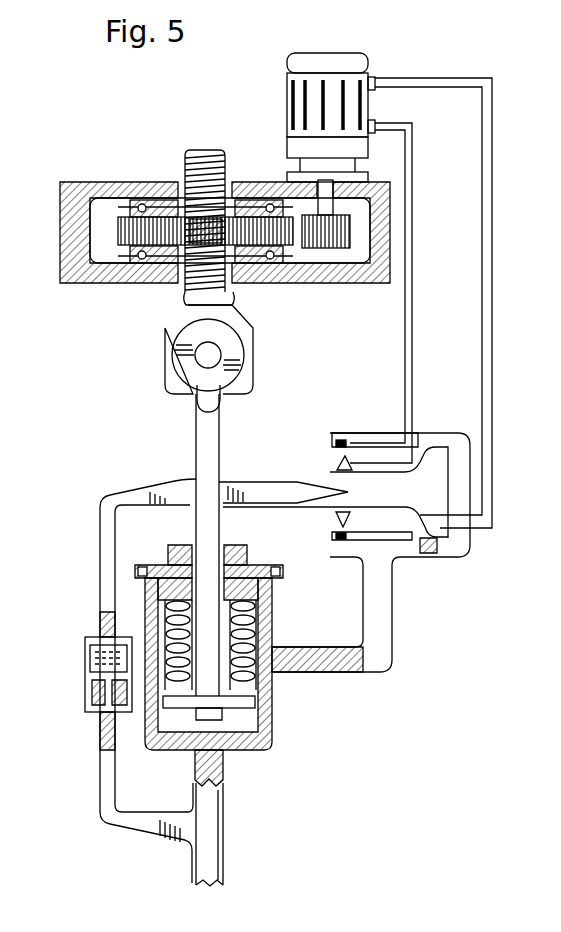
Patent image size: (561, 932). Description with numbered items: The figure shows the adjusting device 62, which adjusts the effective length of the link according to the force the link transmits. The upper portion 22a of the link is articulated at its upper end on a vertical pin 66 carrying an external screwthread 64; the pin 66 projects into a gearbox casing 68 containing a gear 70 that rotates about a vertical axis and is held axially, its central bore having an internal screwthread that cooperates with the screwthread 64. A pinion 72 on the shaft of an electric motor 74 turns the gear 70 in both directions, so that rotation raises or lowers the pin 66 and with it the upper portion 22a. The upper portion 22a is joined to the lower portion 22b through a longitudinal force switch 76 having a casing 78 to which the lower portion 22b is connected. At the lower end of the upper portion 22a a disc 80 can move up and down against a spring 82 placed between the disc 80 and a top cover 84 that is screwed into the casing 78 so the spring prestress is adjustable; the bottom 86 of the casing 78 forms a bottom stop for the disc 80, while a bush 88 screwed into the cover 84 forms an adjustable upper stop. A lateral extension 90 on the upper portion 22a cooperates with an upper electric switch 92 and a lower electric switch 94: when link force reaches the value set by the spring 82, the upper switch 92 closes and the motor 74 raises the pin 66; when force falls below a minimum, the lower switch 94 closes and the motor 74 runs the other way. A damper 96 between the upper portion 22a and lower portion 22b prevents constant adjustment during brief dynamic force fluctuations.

The adjusting device 62 is at (77, 441).
The gearbox casing 68 is at (108, 183).
The gear 70 is at (172, 222).
The external screwthread 64 is at (207, 166).
The pinion 72 is at (327, 249).
The electric motor 74 is at (333, 86).
The vertical pin 66 is at (193, 300).
The upper portion of the link 22a is at (204, 438).
The lateral extension 90 is at (268, 490).
The longitudinal force switch 76 is at (277, 695).
The upper electric switch 92 is at (330, 450).
The lower electric switch 94 is at (332, 519).
The top cover 84 is at (170, 560).
The bush 88 is at (237, 548).
The casing 78 is at (273, 735).
The spring 82 is at (252, 620).
The disc 80 is at (185, 708).
The bottom of the casing 86 is at (228, 730).
The lower portion of the link 22b is at (219, 866).
The damper 96 is at (86, 669).